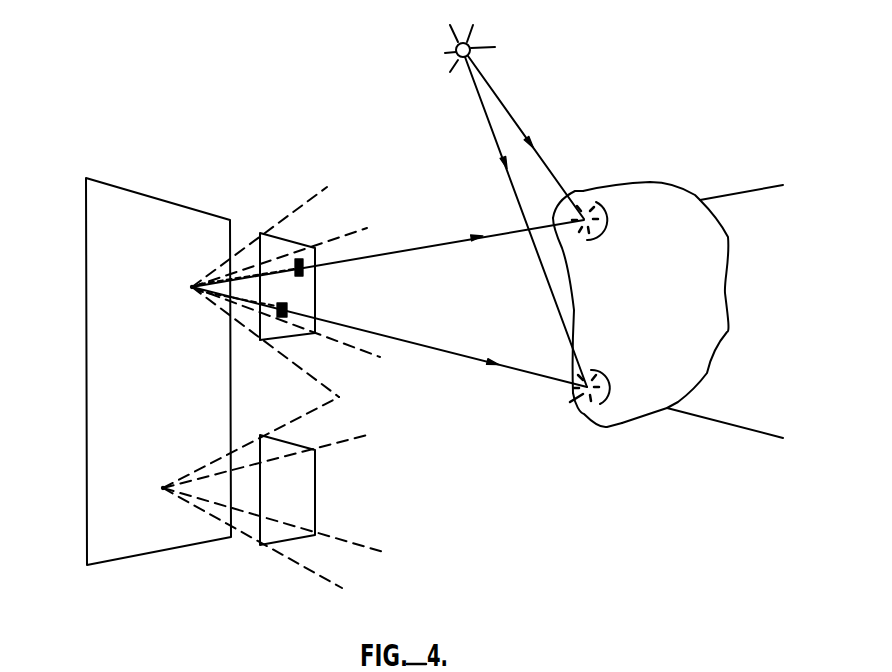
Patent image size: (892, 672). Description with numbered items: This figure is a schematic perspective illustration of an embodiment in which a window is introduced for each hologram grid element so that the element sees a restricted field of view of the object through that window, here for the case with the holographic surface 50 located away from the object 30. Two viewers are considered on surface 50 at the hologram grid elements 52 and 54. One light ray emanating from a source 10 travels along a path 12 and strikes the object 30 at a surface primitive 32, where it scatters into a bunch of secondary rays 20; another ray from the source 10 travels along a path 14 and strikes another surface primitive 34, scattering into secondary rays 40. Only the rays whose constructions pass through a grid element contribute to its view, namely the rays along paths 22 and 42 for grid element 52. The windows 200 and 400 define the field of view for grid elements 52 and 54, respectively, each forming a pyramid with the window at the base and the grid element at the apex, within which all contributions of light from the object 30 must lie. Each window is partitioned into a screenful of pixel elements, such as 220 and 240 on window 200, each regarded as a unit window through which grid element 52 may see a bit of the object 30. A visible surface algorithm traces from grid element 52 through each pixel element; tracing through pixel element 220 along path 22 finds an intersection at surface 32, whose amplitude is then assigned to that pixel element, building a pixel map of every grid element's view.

The source 10 is at (473, 46).
The path 12 is at (515, 122).
The path 14 is at (497, 140).
The secondary rays 20 is at (606, 224).
The path 22 is at (428, 247).
The object 30 is at (668, 307).
The surface primitive 32 is at (587, 200).
The surface primitive 34 is at (598, 428).
The secondary rays 40 is at (606, 388).
The path 42 is at (433, 348).
The holographic surface 50 is at (130, 190).
The grid element 52 is at (192, 287).
The grid element 54 is at (163, 488).
The window 200 is at (304, 278).
The pixel element 220 is at (302, 258).
The pixel element 240 is at (285, 318).
The window 400 is at (287, 542).